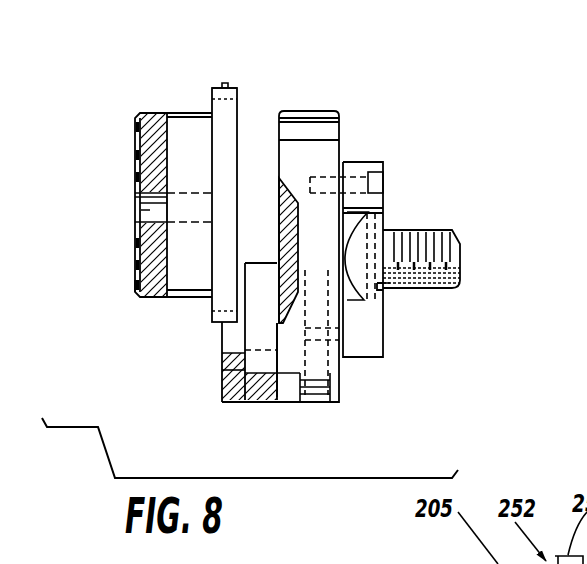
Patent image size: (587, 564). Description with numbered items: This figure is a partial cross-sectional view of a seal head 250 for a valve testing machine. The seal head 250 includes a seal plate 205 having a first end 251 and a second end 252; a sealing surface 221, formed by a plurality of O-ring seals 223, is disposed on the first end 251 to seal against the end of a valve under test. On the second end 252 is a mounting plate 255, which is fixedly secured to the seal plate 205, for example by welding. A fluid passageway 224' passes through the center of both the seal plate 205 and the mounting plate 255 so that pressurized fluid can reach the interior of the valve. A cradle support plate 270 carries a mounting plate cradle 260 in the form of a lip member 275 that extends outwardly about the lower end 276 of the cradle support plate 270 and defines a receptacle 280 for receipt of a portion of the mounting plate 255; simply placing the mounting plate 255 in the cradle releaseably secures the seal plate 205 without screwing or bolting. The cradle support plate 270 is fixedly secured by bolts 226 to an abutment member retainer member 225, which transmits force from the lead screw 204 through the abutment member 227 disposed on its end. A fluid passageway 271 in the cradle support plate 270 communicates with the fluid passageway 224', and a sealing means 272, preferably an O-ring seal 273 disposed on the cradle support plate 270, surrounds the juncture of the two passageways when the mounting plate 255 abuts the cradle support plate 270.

The force transmitting member, or lead screw 204 is at (463, 265).
The seal plate 205 is at (154, 111).
The sealing surface 221 is at (134, 287).
The O-ring seals 223 is at (134, 158).
The fluid passageway 224' is at (101, 218).
The abutment member retainer member 225 is at (377, 162).
The bolts 226 is at (370, 185).
The abutment member 227 is at (384, 287).
The seal head 250 is at (347, 65).
The first end 251 is at (129, 135).
The second end 252 is at (200, 108).
The mounting plate 255 is at (232, 87).
The mounting plate cradle 260 is at (245, 405).
The cradle support plate 270 is at (322, 110).
The fluid passageway 271 is at (290, 255).
The sealing means 272 is at (277, 294).
The O-ring seal 273 is at (270, 202).
The lip member 275 is at (222, 371).
The lower end 276 is at (350, 402).
The receptacle 280 is at (262, 358).